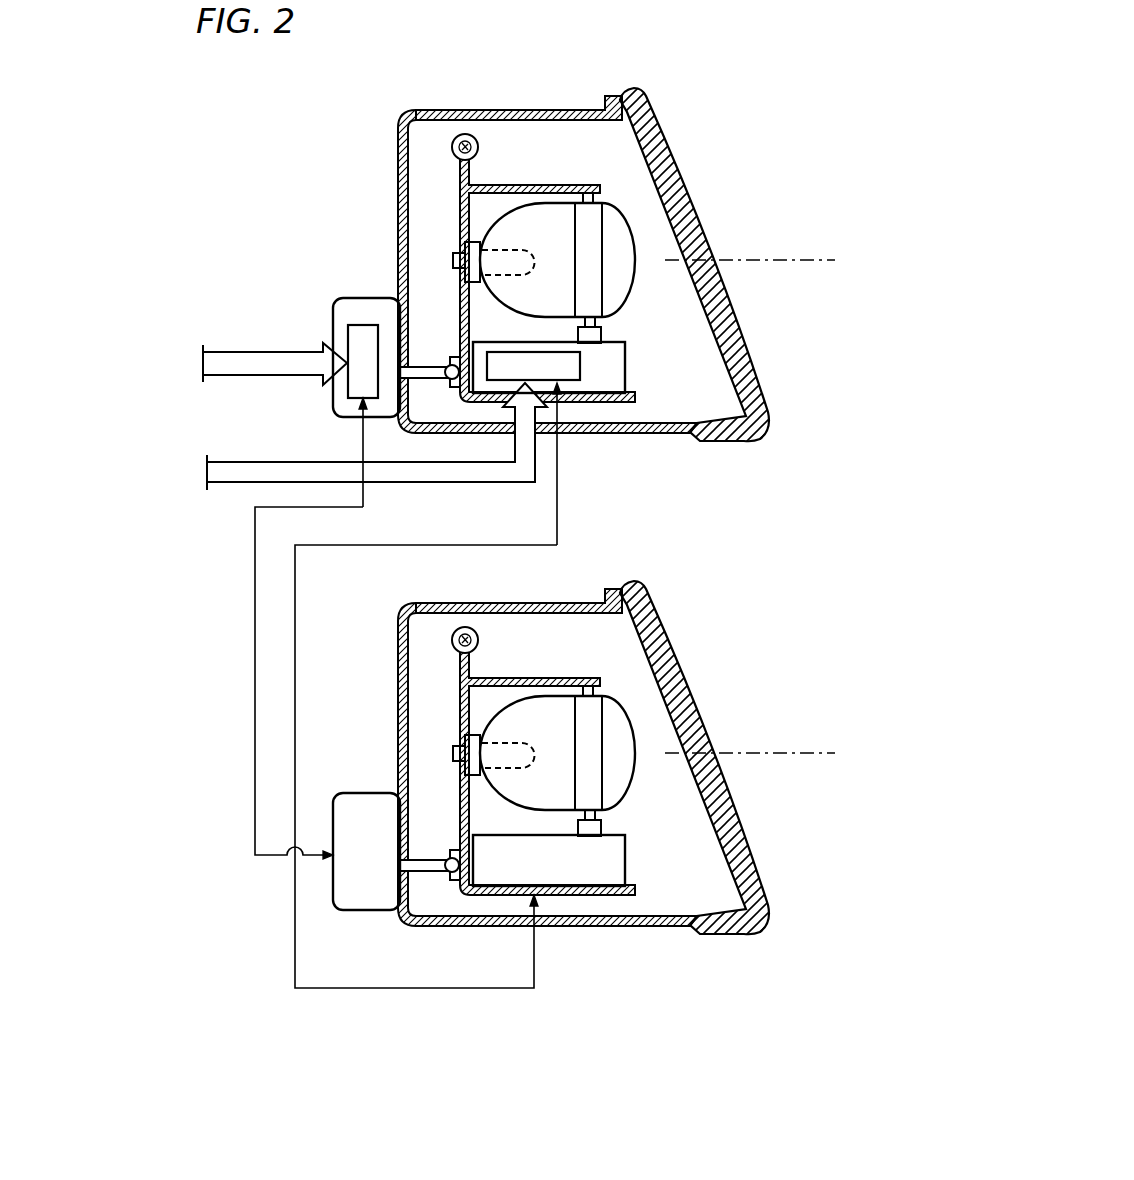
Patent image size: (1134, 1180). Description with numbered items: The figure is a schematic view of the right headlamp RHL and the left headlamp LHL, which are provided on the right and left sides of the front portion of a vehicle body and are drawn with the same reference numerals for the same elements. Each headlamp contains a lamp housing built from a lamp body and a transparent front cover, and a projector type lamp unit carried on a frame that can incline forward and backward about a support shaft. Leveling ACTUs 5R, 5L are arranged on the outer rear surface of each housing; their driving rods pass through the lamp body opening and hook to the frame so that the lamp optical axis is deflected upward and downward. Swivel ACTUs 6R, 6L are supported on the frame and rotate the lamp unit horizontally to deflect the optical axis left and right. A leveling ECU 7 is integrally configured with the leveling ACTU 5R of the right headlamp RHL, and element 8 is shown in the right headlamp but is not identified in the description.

The swivel ACTU 6R is at (643, 411).
The swivel ACTU 6L is at (643, 867).
The leveling ECU 7 is at (343, 335).
The drive circuit 8 is at (608, 381).
The leveling ACTU 5R is at (349, 336).
The leveling ACTU 5L is at (352, 793).
The right headlamp RHL is at (671, 119).
The left headlamp LHL is at (563, 746).